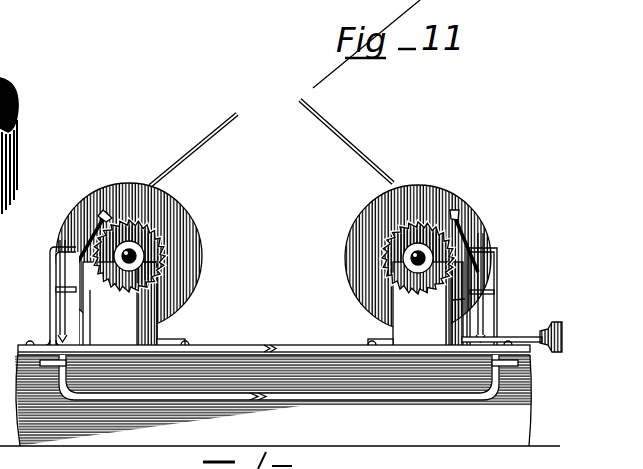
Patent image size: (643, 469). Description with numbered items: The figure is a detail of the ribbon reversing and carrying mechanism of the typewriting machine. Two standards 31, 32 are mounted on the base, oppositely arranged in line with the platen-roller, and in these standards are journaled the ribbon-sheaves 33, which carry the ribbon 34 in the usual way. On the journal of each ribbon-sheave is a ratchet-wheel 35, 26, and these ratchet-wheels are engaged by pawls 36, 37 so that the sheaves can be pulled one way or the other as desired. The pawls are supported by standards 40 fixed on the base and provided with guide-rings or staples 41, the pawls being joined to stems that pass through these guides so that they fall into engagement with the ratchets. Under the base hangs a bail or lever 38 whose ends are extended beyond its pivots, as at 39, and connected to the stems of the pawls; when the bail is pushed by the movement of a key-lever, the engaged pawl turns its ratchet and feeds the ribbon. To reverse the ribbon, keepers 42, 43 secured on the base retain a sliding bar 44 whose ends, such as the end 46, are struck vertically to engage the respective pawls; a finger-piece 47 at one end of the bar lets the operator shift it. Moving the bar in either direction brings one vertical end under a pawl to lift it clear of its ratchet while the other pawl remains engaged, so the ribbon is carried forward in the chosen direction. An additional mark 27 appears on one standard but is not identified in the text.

The ratchet-wheel 26 is at (420, 236).
The shaft 27 is at (452, 300).
The standard 31 is at (132, 304).
The standard 32 is at (415, 304).
The ribbon-sheave 33 is at (273, 257).
The ribbon 34 is at (271, 143).
The ratchet-wheel 35 is at (127, 256).
The pawl 36 is at (461, 236).
The pawl 37 is at (91, 241).
The bail or lever 38 is at (328, 402).
The extended ends of the bail 39 is at (279, 377).
The standard 40 is at (50, 320).
The guide-ring or staple 41 is at (50, 262).
The keeper 42 is at (192, 332).
The keeper 43 is at (372, 344).
The sliding bar 44 is at (274, 341).
The end of the sliding bar 46 is at (91, 305).
The finger-piece 47 is at (513, 324).